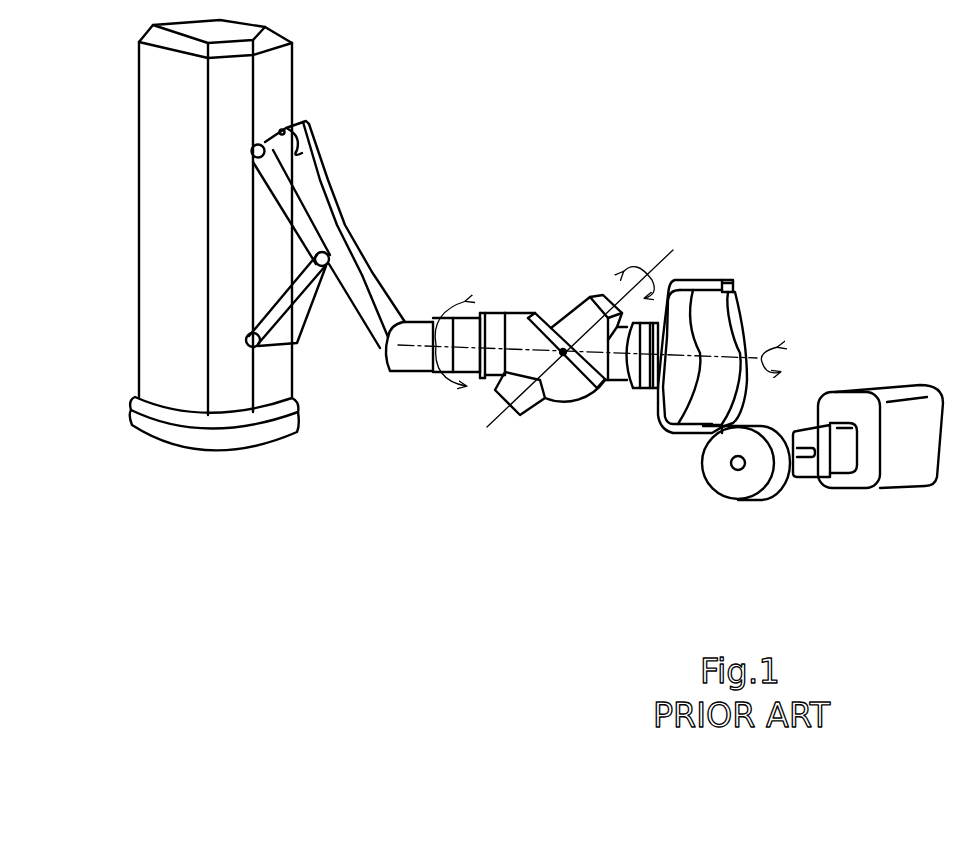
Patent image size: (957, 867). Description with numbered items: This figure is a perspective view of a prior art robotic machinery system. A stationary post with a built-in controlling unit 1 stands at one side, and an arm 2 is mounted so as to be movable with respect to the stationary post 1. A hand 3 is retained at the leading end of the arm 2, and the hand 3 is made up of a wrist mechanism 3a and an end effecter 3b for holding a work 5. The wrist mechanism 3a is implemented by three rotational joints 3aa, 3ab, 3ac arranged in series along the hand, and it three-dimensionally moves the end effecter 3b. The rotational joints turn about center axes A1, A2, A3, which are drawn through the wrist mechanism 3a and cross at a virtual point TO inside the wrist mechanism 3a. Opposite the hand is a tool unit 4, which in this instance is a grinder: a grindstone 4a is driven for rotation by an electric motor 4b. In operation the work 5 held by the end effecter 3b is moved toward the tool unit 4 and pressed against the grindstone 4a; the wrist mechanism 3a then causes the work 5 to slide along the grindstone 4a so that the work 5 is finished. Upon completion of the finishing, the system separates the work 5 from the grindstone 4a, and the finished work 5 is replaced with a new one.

The stationary post with built-in controlling unit 1 is at (150, 188).
The arm 2 is at (343, 212).
The hand 3 is at (531, 235).
The wrist mechanism 3a is at (563, 299).
The rotational joint 3aa is at (478, 300).
The rotational joint 3ab is at (552, 312).
The rotational joint 3ac is at (635, 392).
The end effecter 3b is at (715, 278).
The work 5 is at (722, 313).
The tool unit 4 is at (903, 370).
The grindstone 4a is at (740, 487).
The electric motor 4b is at (908, 478).
The center axis A1 is at (415, 358).
The center axis A2 is at (664, 252).
The center axis A3 is at (760, 350).
The tool offset point TO is at (560, 358).